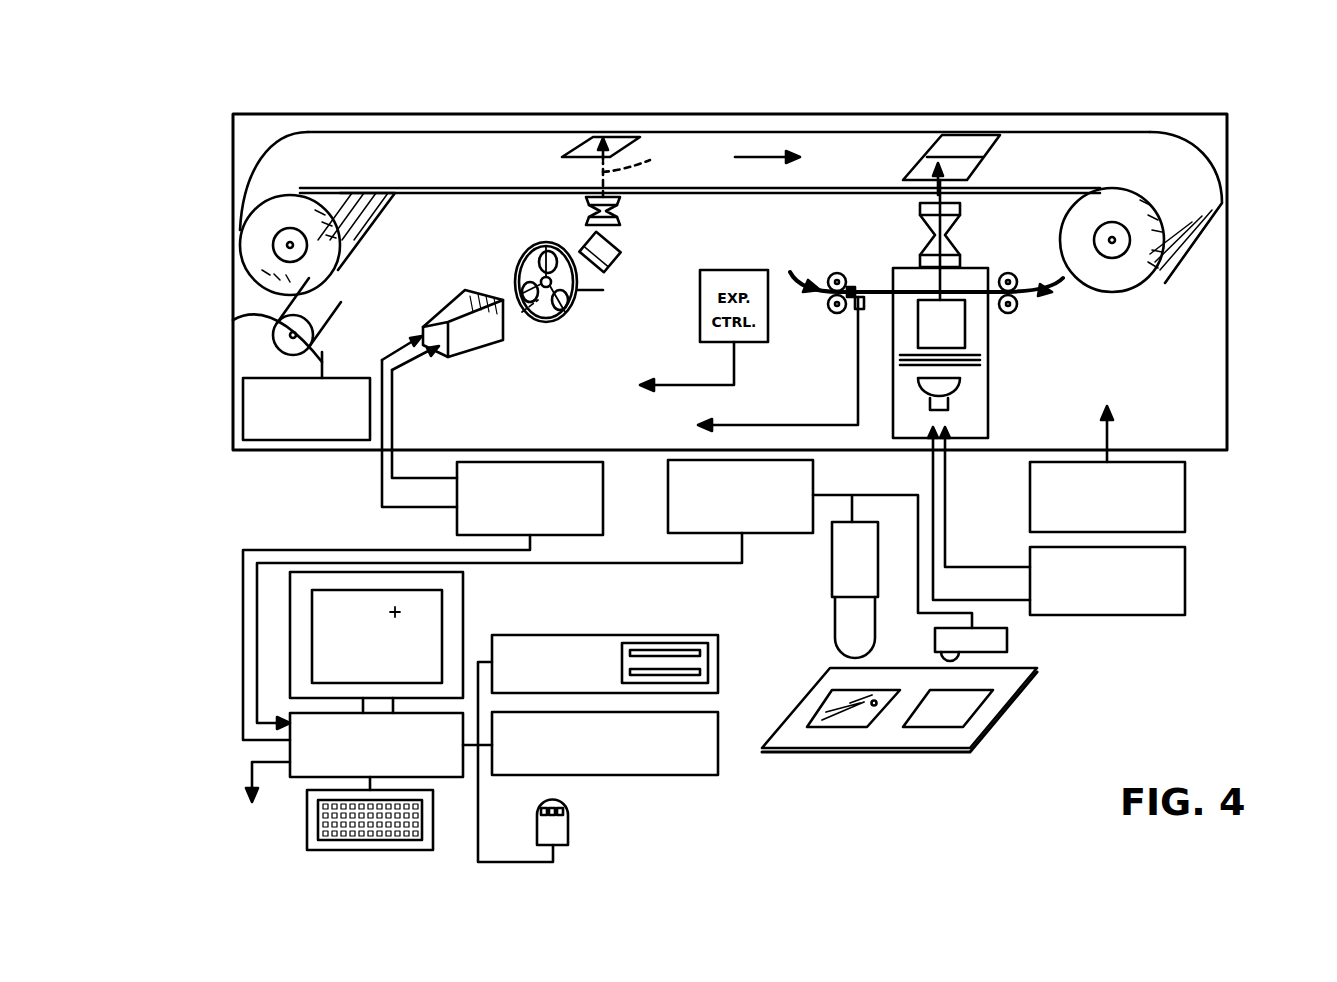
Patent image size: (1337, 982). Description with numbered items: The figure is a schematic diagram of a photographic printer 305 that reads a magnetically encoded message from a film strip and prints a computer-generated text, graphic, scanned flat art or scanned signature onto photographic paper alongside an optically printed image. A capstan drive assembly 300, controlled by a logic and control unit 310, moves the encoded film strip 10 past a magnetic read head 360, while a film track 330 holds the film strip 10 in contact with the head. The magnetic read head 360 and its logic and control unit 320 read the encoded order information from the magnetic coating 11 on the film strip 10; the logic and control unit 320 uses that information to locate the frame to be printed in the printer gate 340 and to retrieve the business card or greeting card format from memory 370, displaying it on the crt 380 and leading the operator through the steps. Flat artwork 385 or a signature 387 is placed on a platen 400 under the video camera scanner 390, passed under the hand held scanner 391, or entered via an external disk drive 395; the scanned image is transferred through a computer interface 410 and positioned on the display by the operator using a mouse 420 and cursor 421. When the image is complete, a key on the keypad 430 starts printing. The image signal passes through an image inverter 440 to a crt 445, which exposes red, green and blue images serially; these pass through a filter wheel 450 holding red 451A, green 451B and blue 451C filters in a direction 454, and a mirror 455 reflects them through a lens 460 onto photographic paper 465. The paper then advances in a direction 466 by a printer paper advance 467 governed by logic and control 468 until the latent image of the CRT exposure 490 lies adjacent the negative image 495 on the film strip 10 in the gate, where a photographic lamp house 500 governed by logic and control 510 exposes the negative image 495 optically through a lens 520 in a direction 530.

The film strip 10 is at (959, 304).
The magnetic coating 11 is at (840, 371).
The capstan drive assembly 300 is at (812, 271).
The photographic printer 305 is at (731, 177).
The logic and control unit 310 is at (1166, 460).
The logic and control unit 320 is at (330, 771).
The film track 330 is at (747, 317).
The printer gate 340 is at (995, 271).
The magnetic read head 360 is at (826, 331).
The memory 370 is at (631, 770).
The crt 380 is at (431, 642).
The flat artwork 385 is at (853, 755).
The signature 387 is at (948, 758).
The video camera scanner 390 is at (813, 590).
The hand held scanner 391 is at (1025, 649).
The external disk drive 395 is at (598, 720).
The platen 400 is at (899, 761).
The computer interface 410 is at (614, 594).
The mouse 420 is at (599, 822).
The cursor 421 is at (361, 639).
The keypad 430 is at (370, 843).
The image inverter 440 is at (423, 601).
The crt 445 is at (432, 398).
The filter wheel 450 is at (549, 309).
The red filter 451A is at (486, 250).
The green filter 451B is at (475, 278).
The blue filter 451C is at (590, 333).
The direction 454 is at (653, 173).
The mirror 455 is at (648, 244).
The lens 460 is at (561, 212).
The photographic paper 465 is at (397, 179).
The direction 466 is at (767, 113).
The printer paper advance 467 is at (245, 328).
The logic and control 468 is at (251, 409).
The CRT exposure 490 is at (787, 129).
The image 495 is at (1019, 164).
The photographic lamp house 500 is at (986, 353).
The logic and control 510 is at (1119, 522).
The lens 520 is at (886, 218).
The direction 530 is at (973, 232).